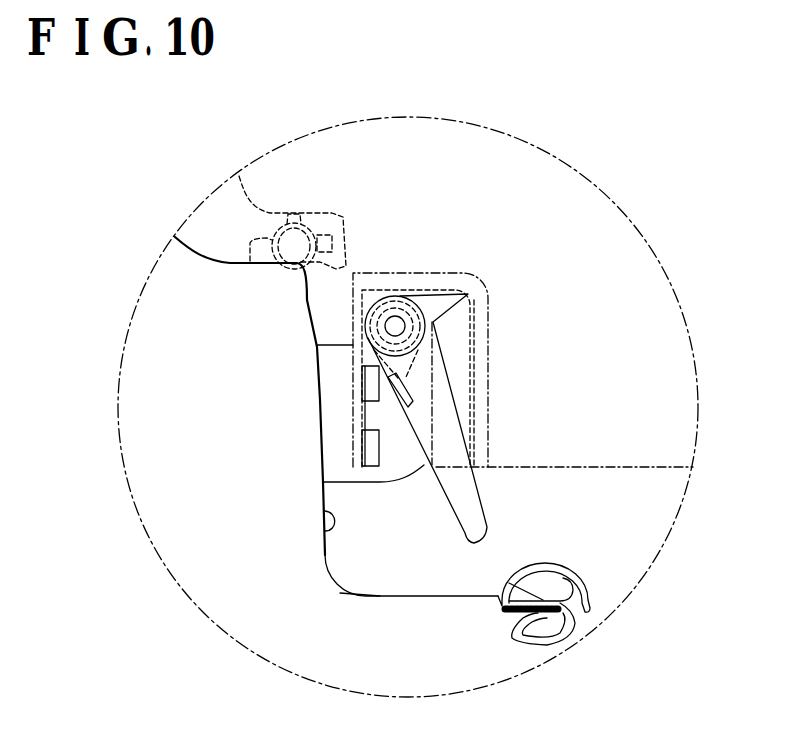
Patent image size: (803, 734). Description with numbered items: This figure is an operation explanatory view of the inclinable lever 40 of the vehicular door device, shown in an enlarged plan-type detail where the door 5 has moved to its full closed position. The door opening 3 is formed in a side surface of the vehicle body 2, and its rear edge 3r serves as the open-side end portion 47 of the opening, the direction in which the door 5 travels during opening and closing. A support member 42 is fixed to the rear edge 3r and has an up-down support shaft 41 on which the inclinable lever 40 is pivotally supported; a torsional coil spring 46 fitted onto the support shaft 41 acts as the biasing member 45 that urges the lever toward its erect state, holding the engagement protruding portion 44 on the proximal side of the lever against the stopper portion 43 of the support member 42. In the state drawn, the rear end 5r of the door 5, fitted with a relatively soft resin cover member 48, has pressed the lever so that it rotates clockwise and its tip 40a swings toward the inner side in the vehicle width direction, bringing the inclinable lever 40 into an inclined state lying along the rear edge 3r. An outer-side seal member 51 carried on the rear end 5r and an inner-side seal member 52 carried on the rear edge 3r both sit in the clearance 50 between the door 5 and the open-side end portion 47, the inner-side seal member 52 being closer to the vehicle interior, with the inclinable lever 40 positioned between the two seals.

The vehicle body 2 is at (198, 255).
The door opening 3 is at (327, 379).
The rear edge of the door opening 3r is at (325, 513).
The door 5 is at (596, 513).
The rear end of the door 5r is at (277, 175).
The inclinable lever 40 is at (495, 426).
The tip of the inclinable lever 40a is at (478, 542).
The support shaft 41 is at (412, 298).
The support member 42 is at (414, 468).
The stopper portion 43 is at (447, 313).
The engagement protruding portion 44 is at (410, 391).
The biasing member 45 is at (420, 286).
The torsional coil spring 46 is at (382, 283).
The open-side end portion 47 is at (274, 522).
The cover member 48 is at (488, 437).
The clearance 50 is at (374, 569).
The outer-side seal member 51 is at (249, 265).
The inner-side seal member 52 is at (577, 576).